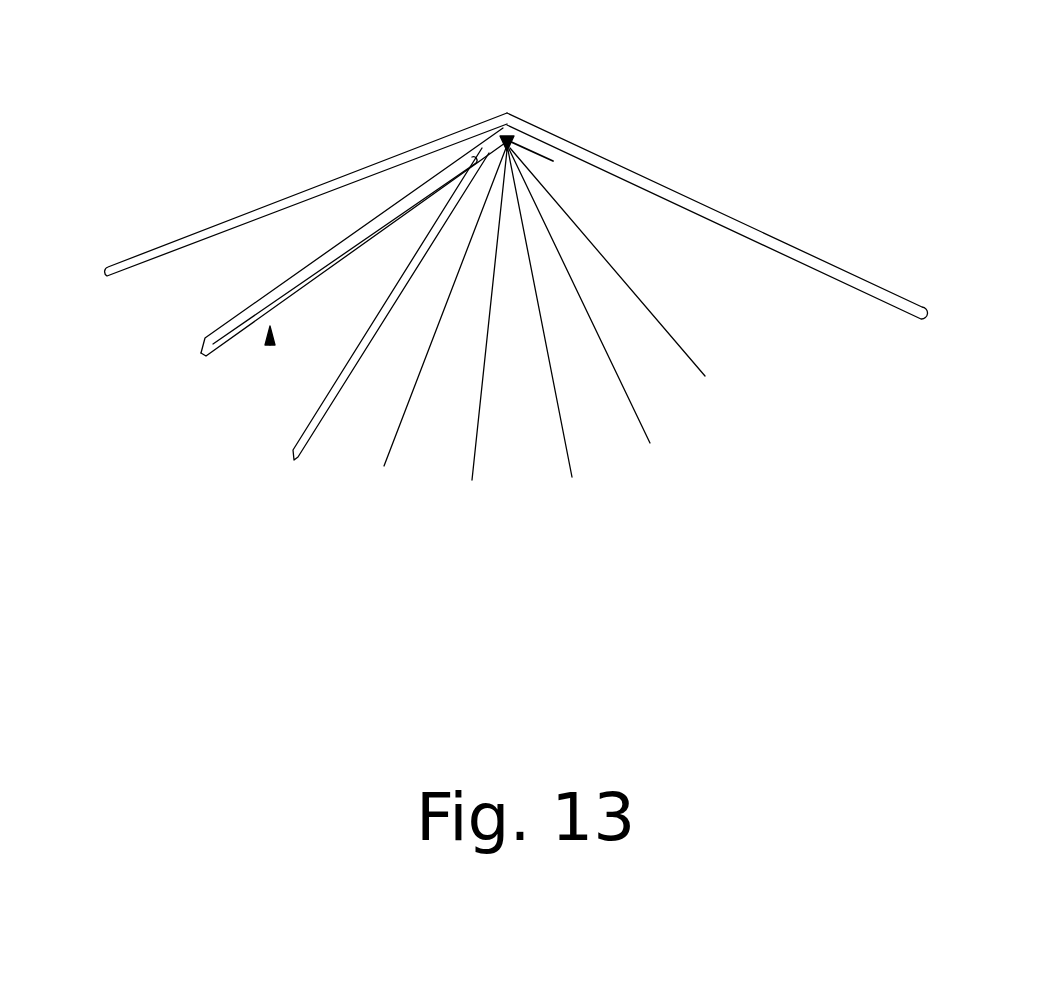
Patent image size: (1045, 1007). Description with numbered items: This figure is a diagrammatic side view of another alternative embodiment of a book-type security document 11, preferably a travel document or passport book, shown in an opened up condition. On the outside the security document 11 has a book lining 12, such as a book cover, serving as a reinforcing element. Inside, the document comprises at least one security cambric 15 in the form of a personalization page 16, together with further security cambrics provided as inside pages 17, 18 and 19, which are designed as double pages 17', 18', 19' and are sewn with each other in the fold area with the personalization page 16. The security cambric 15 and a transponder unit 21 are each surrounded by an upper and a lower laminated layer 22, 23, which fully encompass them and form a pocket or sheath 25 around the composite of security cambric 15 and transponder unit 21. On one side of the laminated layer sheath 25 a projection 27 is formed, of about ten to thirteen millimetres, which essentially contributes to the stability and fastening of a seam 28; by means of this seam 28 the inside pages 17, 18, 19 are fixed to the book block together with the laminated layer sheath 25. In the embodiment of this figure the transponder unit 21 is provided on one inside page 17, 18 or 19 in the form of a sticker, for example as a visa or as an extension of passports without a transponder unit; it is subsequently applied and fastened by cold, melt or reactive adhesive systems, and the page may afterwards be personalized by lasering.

The security document 11 is at (666, 155).
The book lining 12 is at (143, 254).
The security cambric 15 is at (270, 345).
The personalization page 16 is at (283, 302).
The inside page 17 is at (330, 510).
The inside page 18 is at (445, 365).
The inside page 19 is at (514, 361).
The double page 17' is at (586, 361).
The double page 18' is at (652, 337).
The double page 19' is at (689, 294).
The transponder unit 21 is at (297, 437).
The upper laminated layer 22 is at (205, 350).
The lower laminated layer 23 is at (252, 328).
The sheath 25 is at (200, 355).
The projection 27 is at (535, 148).
The seam 28 is at (507, 113).